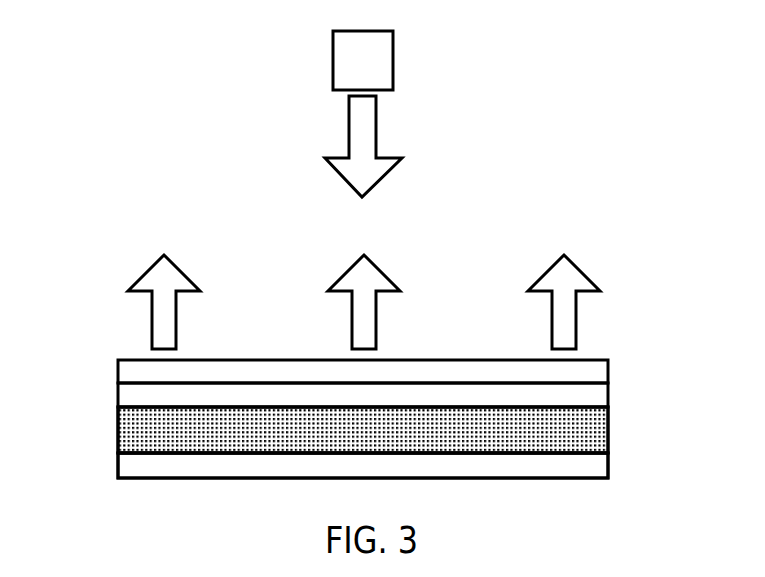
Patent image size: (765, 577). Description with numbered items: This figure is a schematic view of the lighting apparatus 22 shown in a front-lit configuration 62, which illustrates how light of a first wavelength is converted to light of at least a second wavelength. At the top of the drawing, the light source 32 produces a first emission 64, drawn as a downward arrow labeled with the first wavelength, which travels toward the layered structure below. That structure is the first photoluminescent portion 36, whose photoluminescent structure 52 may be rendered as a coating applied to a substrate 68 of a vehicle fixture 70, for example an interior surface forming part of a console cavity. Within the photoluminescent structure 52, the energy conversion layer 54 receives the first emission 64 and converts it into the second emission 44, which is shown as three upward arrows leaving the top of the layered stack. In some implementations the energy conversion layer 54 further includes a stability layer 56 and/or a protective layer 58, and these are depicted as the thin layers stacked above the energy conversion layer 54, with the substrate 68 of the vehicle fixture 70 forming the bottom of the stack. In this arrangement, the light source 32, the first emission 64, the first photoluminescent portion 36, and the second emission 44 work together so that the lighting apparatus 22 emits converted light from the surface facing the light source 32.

The lighting apparatus 22 is at (104, 28).
The light source 32 is at (363, 60).
The first photoluminescent portion 36 is at (629, 352).
The second emission 44 is at (176, 320).
The photoluminescent structure 52 is at (363, 430).
The energy conversion layer 54 is at (598, 430).
The stability layer 56 is at (120, 395).
The protective layer 58 is at (120, 372).
The front-lit configuration 62 is at (549, 101).
The first emission 64 is at (372, 124).
The substrate 68 is at (567, 470).
The vehicle fixture 70 is at (363, 465).